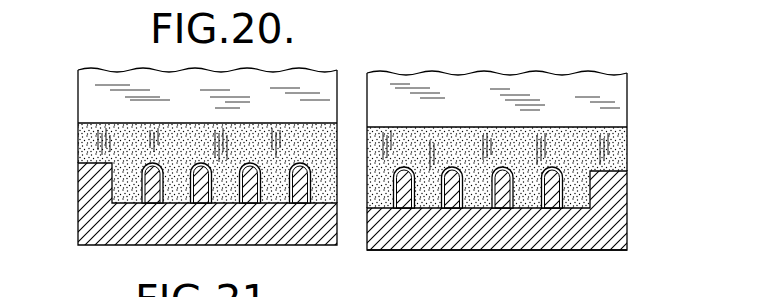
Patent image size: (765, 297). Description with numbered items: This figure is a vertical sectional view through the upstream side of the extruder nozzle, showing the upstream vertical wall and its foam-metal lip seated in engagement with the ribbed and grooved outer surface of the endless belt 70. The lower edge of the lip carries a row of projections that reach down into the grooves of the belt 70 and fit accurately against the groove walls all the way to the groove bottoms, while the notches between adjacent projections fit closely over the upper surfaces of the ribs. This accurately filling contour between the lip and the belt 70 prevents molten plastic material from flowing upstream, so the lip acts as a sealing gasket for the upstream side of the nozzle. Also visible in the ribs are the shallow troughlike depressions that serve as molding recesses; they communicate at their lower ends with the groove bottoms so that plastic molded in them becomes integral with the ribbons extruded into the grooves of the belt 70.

The endless belt 70 is at (468, 250).